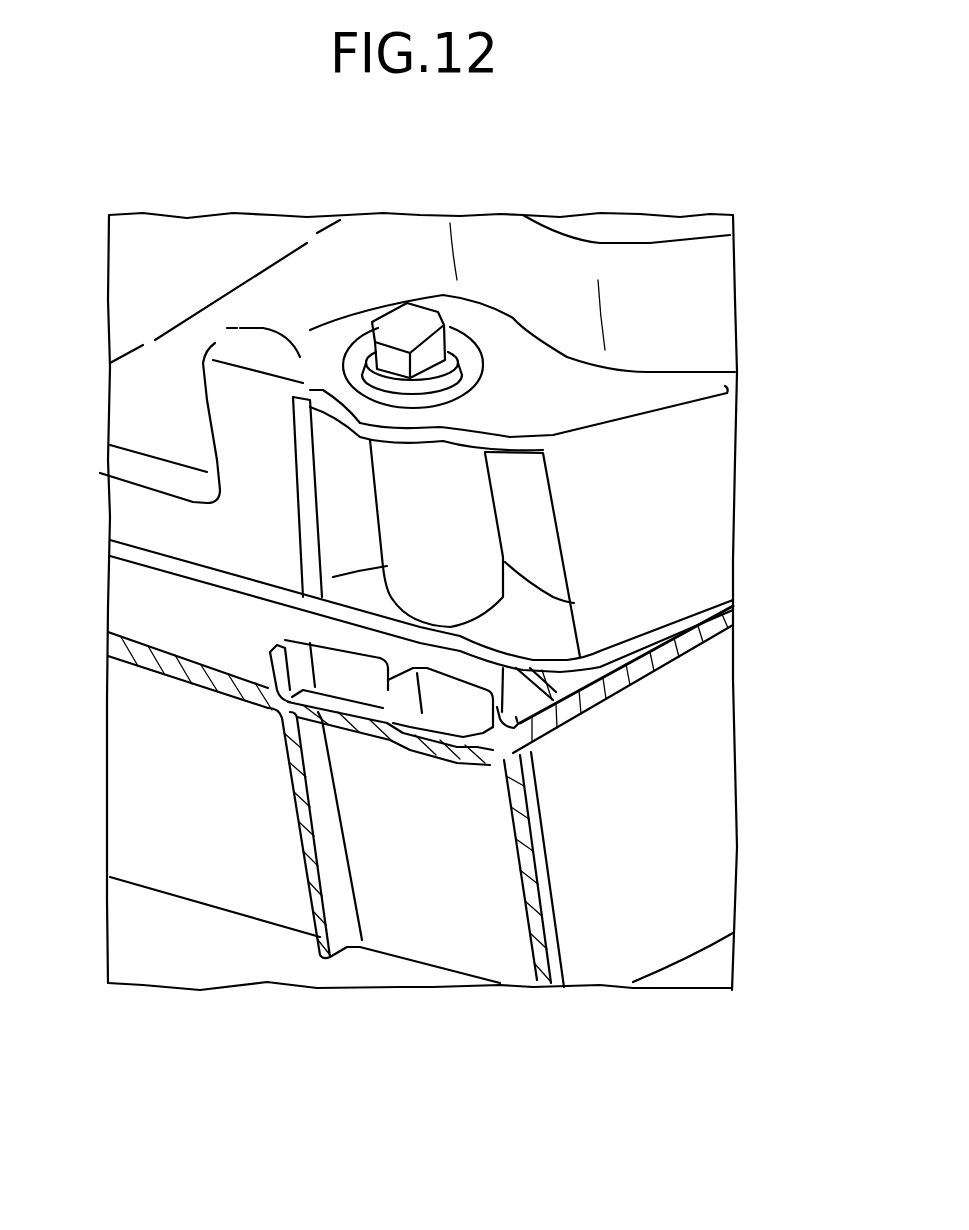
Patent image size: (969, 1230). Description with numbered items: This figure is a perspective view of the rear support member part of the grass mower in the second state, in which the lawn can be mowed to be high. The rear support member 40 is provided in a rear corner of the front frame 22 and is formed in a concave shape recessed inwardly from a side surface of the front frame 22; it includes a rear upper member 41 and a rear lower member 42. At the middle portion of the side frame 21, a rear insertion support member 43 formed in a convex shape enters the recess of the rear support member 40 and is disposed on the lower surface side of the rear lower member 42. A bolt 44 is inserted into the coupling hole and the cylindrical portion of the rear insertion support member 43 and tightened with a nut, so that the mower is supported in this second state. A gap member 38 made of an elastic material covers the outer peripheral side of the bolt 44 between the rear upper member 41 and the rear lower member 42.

The side frame 21 is at (597, 883).
The front frame 22 is at (641, 237).
The gap member 38 is at (433, 525).
The rear support member 40 is at (263, 328).
The rear upper member 41 is at (503, 387).
The rear lower member 42 is at (528, 630).
The rear insertion support member 43 is at (350, 635).
The bolt 44 is at (412, 323).